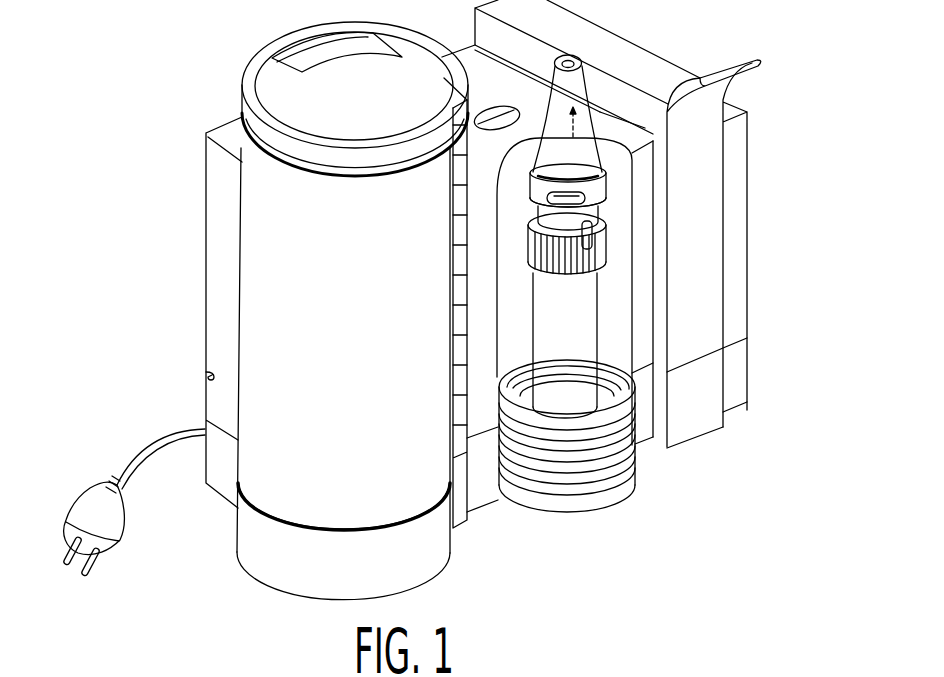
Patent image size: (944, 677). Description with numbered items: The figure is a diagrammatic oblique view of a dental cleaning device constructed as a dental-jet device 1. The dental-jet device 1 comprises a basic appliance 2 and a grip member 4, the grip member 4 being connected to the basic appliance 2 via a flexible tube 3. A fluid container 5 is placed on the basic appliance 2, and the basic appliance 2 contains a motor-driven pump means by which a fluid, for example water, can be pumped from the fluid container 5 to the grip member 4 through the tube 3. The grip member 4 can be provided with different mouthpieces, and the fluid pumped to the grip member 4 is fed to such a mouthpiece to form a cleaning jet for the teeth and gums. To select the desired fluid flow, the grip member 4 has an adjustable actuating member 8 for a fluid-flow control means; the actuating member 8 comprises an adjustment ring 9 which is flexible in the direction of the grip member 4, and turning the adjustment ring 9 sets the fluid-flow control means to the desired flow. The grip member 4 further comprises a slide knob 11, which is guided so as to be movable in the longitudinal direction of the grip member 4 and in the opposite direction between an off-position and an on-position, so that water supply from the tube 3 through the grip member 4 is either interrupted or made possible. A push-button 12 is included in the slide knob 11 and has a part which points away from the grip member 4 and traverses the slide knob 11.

The dental-jet device 1 is at (209, 92).
The basic appliance 2 is at (202, 300).
The flexible tube 3 is at (542, 473).
The grip member 4 is at (600, 401).
The fluid container 5 is at (272, 236).
The actuating member 8 is at (577, 284).
The adjustment ring 9 is at (607, 243).
The slide knob 11 is at (607, 197).
The push-button 12 is at (608, 182).